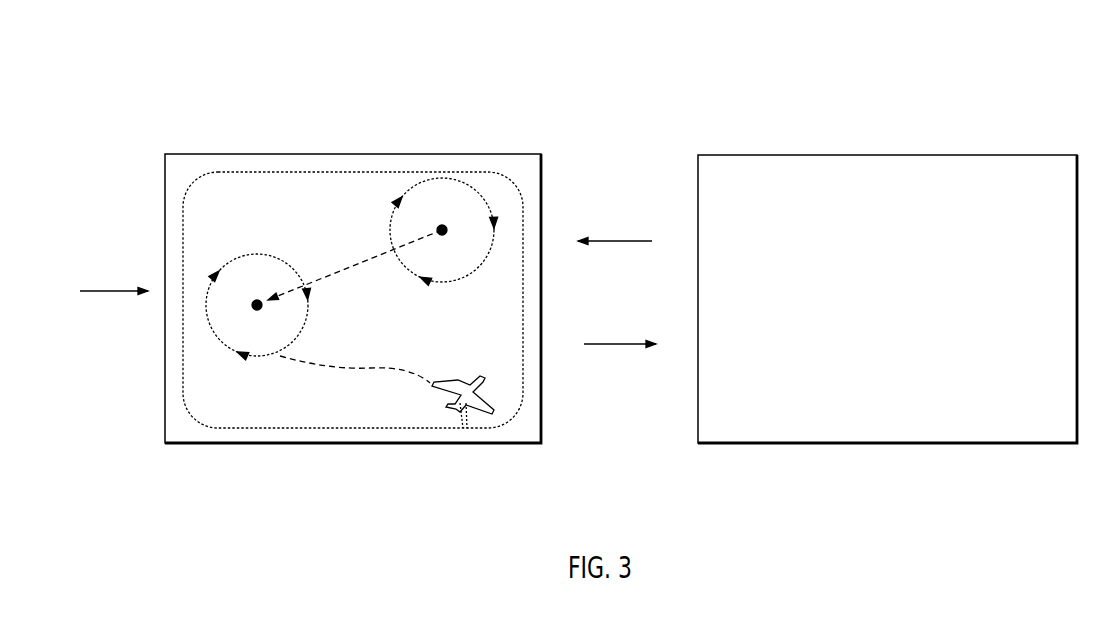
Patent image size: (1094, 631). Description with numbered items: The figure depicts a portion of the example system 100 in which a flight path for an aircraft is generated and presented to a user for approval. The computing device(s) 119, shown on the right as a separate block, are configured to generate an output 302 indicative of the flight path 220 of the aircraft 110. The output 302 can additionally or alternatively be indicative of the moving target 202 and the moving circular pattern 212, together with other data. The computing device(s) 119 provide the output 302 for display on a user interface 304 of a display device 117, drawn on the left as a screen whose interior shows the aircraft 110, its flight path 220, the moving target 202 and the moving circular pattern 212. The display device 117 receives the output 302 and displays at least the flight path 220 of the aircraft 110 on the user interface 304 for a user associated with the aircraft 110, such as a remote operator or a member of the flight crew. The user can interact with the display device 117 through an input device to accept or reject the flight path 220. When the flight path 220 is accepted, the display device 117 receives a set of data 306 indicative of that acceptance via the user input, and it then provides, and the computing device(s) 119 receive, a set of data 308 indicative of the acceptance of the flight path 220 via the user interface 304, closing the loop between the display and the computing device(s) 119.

The system 100 is at (253, 72).
The display device 117 is at (283, 154).
The user interface 304 is at (208, 262).
The moving target 202 is at (257, 299).
The moving circular pattern 212 is at (306, 326).
The flight path 220 is at (388, 366).
The aircraft 110 is at (485, 378).
The set of data indicative of an acceptance 306 is at (110, 291).
The output 302 is at (612, 241).
The set of data indicative of an acceptance 308 is at (612, 344).
The computing device(s) 119 is at (902, 313).